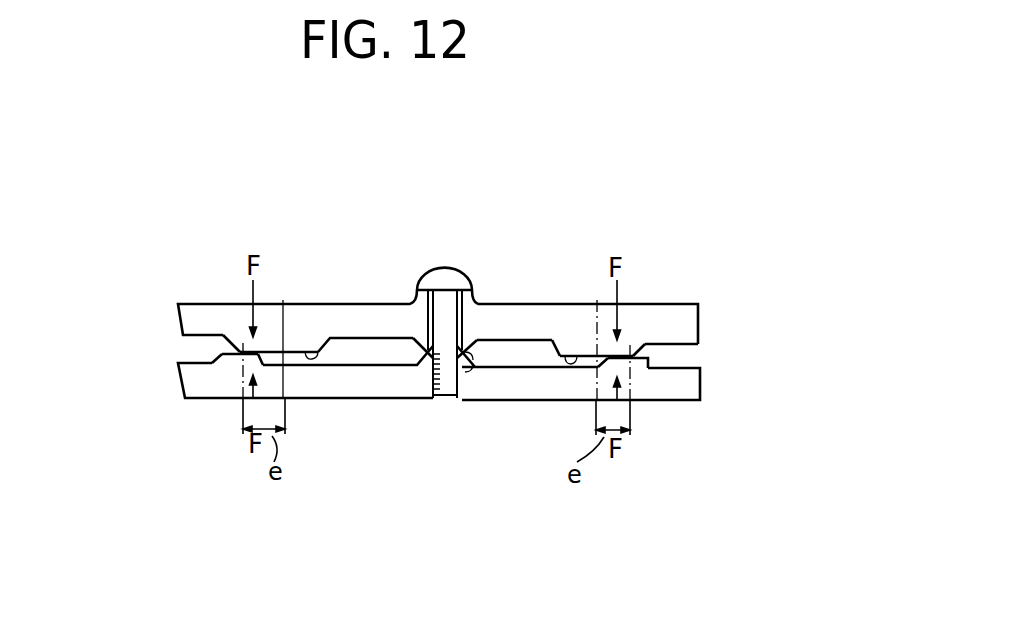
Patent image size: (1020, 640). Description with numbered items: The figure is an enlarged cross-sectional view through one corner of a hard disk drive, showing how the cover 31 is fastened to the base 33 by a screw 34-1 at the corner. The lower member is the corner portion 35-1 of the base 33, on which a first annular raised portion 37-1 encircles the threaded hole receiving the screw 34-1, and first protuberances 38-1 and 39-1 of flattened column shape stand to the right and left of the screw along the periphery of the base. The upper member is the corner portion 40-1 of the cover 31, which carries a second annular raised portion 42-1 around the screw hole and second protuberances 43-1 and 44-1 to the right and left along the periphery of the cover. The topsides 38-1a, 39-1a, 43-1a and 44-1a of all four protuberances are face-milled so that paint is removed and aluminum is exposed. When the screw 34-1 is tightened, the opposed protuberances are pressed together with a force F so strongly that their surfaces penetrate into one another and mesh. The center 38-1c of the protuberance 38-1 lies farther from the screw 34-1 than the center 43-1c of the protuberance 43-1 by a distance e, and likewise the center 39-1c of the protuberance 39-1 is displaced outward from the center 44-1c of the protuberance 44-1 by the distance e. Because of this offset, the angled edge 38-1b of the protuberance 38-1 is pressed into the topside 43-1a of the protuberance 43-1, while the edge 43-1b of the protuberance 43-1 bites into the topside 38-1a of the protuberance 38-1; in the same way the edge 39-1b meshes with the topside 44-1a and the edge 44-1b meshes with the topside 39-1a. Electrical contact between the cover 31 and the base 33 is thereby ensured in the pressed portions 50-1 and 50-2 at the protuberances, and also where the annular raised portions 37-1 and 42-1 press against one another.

The cover 31 is at (173, 295).
The base 33 is at (170, 378).
The screw 34-1 is at (442, 270).
The corner portion of the base 35-1 is at (680, 395).
The first annular raised portion 37-1 is at (481, 370).
The first protuberance 38-1 is at (636, 370).
The topside of protuberance 38-1 38-1a is at (645, 348).
The edge of protuberance 38-1 38-1b is at (598, 367).
The center of protuberance 38-1 38-1c is at (634, 460).
The first protuberance 39-1 is at (237, 362).
The topside of protuberance 39-1 39-1a is at (237, 354).
The edge of protuberance 39-1 39-1b is at (262, 366).
The center of protuberance 39-1 39-1c is at (243, 408).
The corner portion of the cover 40-1 is at (683, 313).
The second annular raised portion 42-1 is at (489, 315).
The second protuberance 43-1 is at (583, 347).
The topside of protuberance 43-1 43-1a is at (560, 345).
The edge of protuberance 43-1 43-1b is at (633, 347).
The center of protuberance 43-1 43-1c is at (597, 300).
The second protuberance 44-1 is at (296, 338).
The topside of protuberance 44-1 44-1a is at (323, 342).
The edge of protuberance 44-1 44-1b is at (236, 347).
The center of protuberance 44-1 44-1c is at (283, 300).
The pressed portion 50-1 is at (199, 377).
The pressed portion 50-2 is at (673, 381).